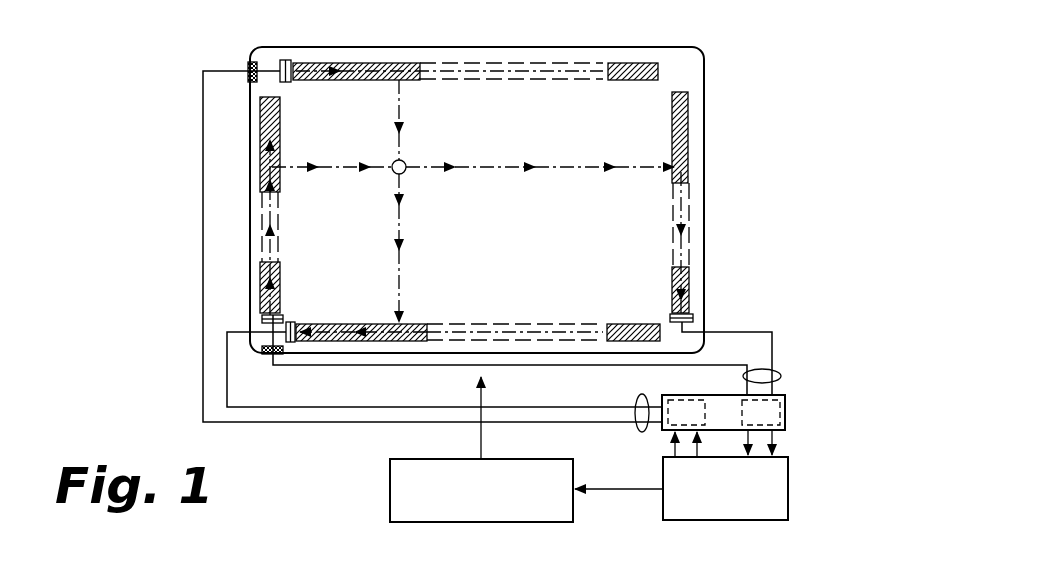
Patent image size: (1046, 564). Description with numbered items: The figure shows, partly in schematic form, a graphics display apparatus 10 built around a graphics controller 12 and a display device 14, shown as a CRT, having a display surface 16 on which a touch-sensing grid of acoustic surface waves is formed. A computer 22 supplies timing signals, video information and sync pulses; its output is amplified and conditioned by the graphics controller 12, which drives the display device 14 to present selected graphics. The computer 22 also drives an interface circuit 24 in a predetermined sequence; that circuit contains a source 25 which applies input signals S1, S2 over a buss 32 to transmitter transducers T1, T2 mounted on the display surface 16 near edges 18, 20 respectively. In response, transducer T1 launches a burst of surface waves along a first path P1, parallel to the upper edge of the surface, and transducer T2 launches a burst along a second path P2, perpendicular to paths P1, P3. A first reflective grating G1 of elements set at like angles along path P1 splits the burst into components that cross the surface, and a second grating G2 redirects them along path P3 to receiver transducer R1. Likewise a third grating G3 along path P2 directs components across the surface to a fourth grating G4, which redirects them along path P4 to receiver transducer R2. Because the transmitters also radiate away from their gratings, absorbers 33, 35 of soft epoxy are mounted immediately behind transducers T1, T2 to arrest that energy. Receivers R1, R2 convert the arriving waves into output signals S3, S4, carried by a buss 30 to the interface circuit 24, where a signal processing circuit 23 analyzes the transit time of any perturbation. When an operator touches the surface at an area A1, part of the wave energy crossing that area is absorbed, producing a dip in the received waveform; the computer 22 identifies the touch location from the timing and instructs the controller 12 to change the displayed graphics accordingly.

The graphics display apparatus 10 is at (185, 258).
The graphics controller 12 is at (390, 503).
The display device 14 is at (704, 47).
The display surface 16 is at (635, 110).
The edge 18 is at (250, 130).
The edge 20 is at (418, 353).
The computer 22 is at (788, 505).
The signal processing circuit 23 is at (790, 402).
The interface circuit 24 is at (790, 428).
The source 25 is at (663, 432).
The buss 30 is at (780, 376).
The buss 32 is at (638, 398).
The absorber 33 is at (257, 82).
The absorber 35 is at (262, 350).
The transmitter transducer T1 is at (278, 65).
The transmitter transducer T2 is at (262, 318).
The receiver transducer R1 is at (293, 344).
The receiver transducer R2 is at (693, 318).
The first reflective grating G1 is at (358, 82).
The second reflective grating G2 is at (367, 343).
The third reflective grating G3 is at (280, 290).
The fourth reflective grating G4 is at (678, 287).
The first path P1 is at (562, 72).
The second path P2 is at (280, 141).
The path P3 is at (537, 333).
The path P4 is at (680, 135).
The touched area A1 is at (406, 173).
The input signal S1 is at (340, 423).
The input signal S2 is at (408, 407).
The output signal S3 is at (720, 365).
The output signal S4 is at (758, 332).